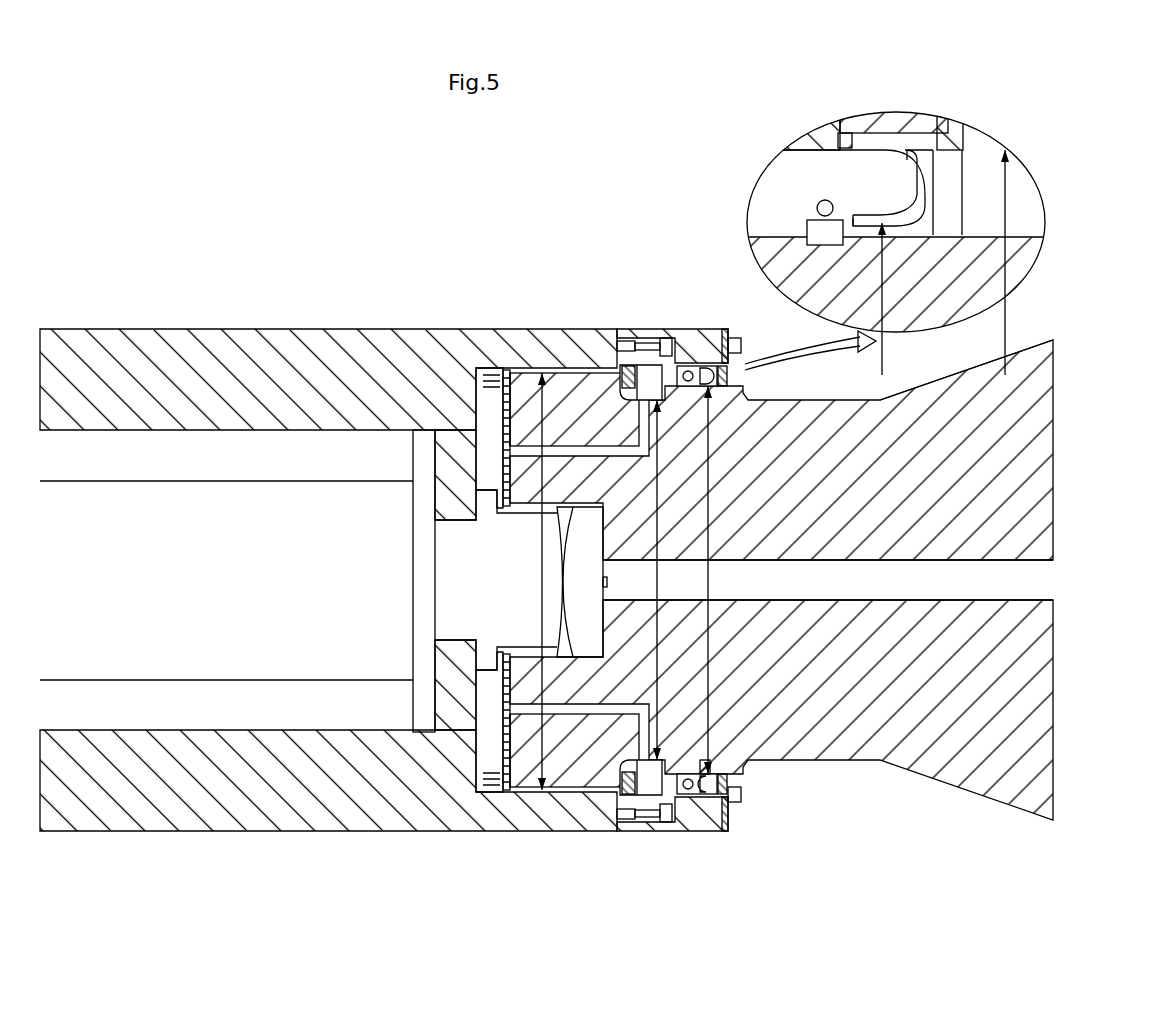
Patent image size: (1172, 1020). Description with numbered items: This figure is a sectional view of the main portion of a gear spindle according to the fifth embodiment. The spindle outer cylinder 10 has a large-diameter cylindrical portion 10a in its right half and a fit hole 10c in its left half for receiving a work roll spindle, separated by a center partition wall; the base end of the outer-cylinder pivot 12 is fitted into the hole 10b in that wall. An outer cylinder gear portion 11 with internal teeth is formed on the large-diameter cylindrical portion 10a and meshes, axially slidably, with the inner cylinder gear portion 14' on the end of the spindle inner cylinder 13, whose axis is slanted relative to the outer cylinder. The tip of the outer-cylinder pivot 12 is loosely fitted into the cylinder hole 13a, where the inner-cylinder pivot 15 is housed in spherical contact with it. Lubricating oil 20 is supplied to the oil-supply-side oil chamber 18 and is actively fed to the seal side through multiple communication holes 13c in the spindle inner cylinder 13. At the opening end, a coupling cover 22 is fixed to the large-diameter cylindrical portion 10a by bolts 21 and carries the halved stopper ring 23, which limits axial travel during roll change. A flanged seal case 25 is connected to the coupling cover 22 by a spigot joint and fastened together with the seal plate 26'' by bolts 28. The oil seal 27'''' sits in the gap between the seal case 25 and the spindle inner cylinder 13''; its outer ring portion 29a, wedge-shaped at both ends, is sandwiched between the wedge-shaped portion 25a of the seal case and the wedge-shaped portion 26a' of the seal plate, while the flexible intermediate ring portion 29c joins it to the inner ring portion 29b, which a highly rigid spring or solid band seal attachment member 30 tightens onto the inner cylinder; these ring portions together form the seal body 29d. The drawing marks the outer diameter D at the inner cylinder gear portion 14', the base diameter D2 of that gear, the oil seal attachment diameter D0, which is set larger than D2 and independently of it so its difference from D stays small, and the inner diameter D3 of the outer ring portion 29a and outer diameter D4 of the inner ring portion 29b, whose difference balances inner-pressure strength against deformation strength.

The spindle outer cylinder 10 is at (262, 326).
The large-diameter cylindrical portion 10a is at (583, 352).
The hole in the center-portion partition wall 10b is at (452, 522).
The fit hole 10c is at (160, 435).
The outer cylinder gear portion 11 is at (492, 396).
The outer-cylinder pivot 12 is at (490, 625).
The spindle inner cylinder 13 is at (781, 516).
The cylinder hole 13a is at (815, 594).
The communication holes 13c is at (572, 448).
The spindle inner cylinder 13'' is at (966, 366).
The inner cylinder gear portion 14' is at (529, 528).
The inner-cylinder pivot 15 is at (580, 612).
The oil-supply-side oil chamber 18 is at (488, 438).
The lubricating oil 20 is at (497, 778).
The bolts 21 is at (668, 346).
The coupling cover 22 is at (648, 346).
The stopper ring 23 is at (616, 341).
The seal case 25 is at (897, 118).
The wedge-shaped portion 25a is at (841, 124).
The seal plate 26'' is at (976, 161).
The wedge-shaped portion 26a' is at (1005, 135).
The oil seal 27'''' is at (791, 464).
The bolts 28 is at (740, 338).
The outer ring portion 29a is at (935, 180).
The inner ring portion 29b is at (930, 232).
The intermediate ring portion 29c is at (900, 205).
The seal lip 29d is at (1100, 165).
The seal attachment member 30 is at (817, 205).
The outer diameter of the spindle inner cylinder at the inner cylinder gear portion D is at (530, 581).
The outer diameter of the oil seal attachment portion D0 is at (725, 580).
The diameter of the base of the inner cylinder gear portion D2 is at (671, 580).
The inner diameter of the outer ring portion D3 is at (1019, 262).
The outer diameter of the inner ring portion D4 is at (896, 299).